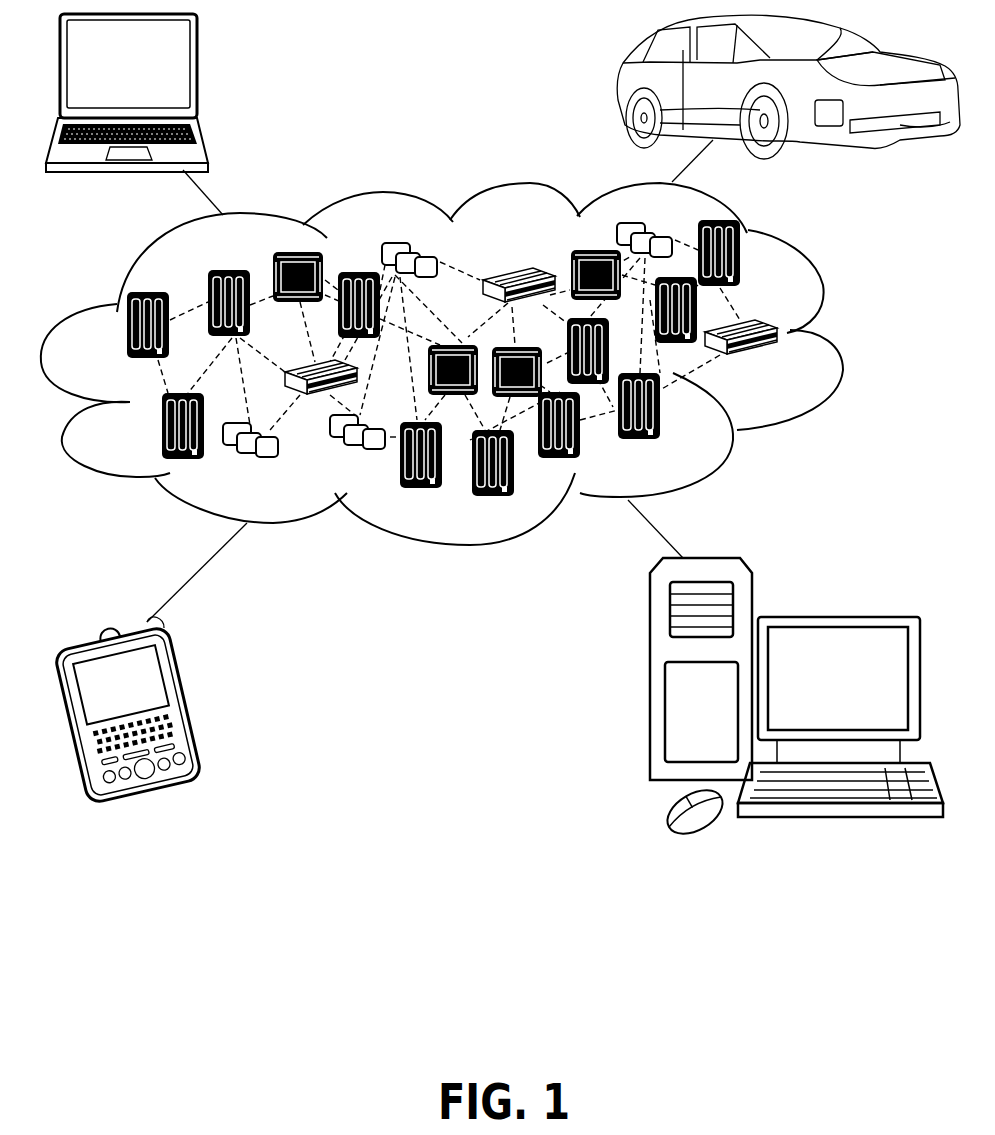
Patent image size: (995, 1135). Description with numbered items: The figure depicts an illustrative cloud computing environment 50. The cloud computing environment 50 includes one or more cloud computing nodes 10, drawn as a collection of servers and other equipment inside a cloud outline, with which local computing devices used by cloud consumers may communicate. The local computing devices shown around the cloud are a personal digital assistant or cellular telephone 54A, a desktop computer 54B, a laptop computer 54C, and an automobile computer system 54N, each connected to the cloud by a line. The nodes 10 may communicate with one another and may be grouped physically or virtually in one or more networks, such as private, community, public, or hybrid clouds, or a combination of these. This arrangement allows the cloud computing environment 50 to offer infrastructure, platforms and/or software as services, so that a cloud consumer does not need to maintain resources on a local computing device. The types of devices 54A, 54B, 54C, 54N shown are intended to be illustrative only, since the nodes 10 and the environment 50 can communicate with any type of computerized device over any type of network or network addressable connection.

The cloud computing node 10 is at (786, 368).
The cloud computing environment 50 is at (840, 340).
The personal digital assistant or cellular telephone 54A is at (183, 707).
The desktop computer 54B is at (838, 614).
The laptop computer 54C is at (197, 73).
The automobile computer system 54N is at (622, 88).